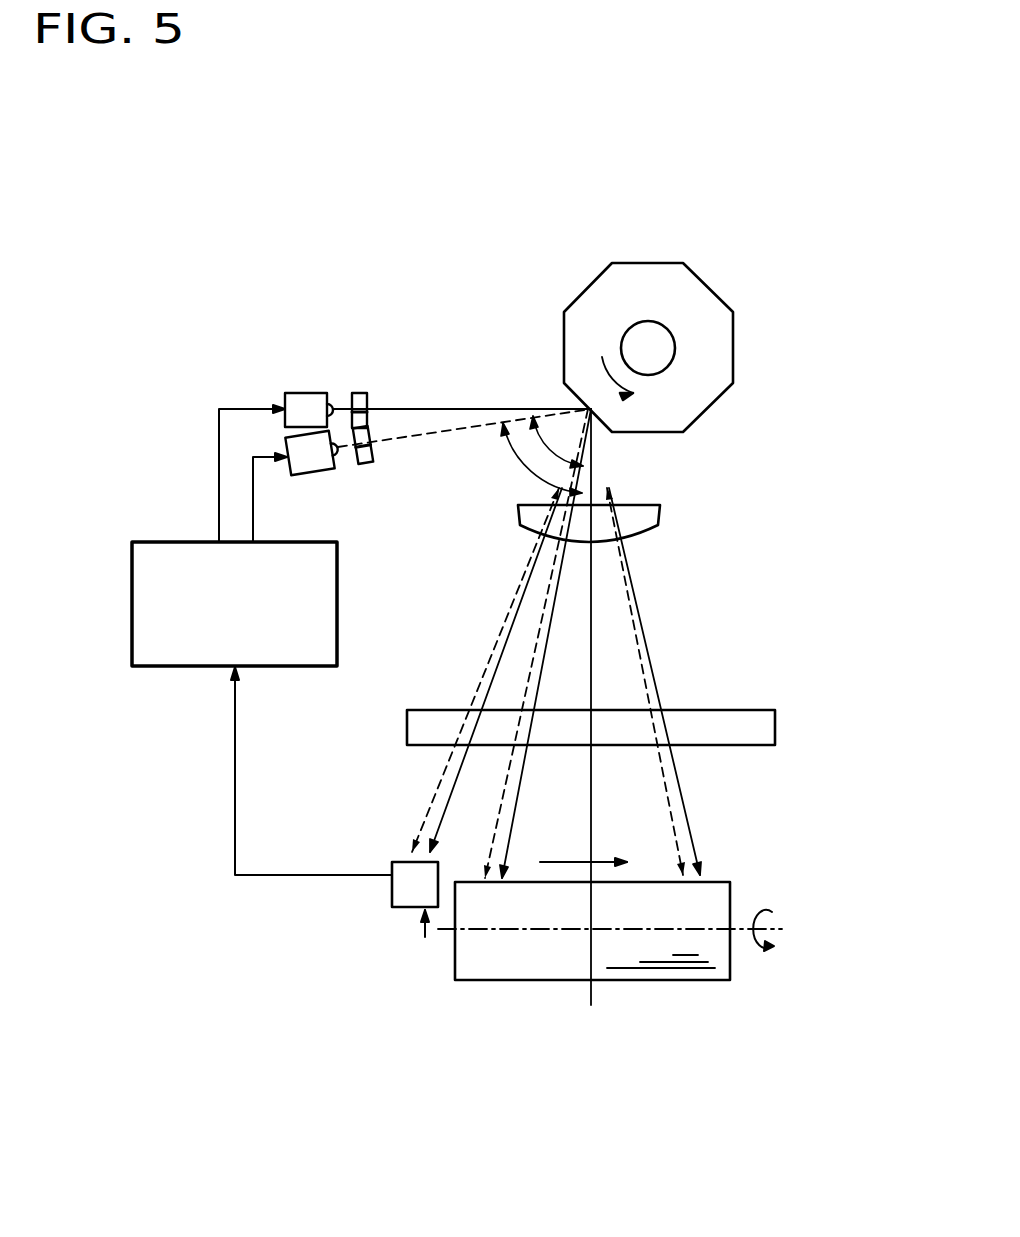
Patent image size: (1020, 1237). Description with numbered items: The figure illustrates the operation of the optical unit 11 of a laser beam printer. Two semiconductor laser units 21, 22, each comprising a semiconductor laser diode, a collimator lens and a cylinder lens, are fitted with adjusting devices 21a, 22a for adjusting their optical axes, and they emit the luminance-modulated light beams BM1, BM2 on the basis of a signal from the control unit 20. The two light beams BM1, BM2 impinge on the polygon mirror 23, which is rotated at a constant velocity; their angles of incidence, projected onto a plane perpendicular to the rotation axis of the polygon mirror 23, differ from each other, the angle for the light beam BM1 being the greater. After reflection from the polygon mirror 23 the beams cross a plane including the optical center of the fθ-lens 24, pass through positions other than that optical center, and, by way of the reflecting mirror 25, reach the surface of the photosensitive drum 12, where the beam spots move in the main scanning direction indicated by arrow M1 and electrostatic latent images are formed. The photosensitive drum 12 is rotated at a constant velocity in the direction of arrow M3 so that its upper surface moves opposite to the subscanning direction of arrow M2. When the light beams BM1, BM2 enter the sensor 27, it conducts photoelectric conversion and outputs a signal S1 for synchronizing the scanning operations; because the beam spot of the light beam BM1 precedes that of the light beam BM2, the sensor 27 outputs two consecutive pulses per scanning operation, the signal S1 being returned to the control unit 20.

The optical unit 11 is at (479, 254).
The photosensitive drum 12 is at (673, 982).
The control unit 20 is at (160, 667).
The semiconductor laser unit 21 is at (303, 390).
The adjusting device 21a is at (358, 392).
The semiconductor laser unit 22 is at (287, 440).
The adjusting device 22a is at (358, 463).
The polygon mirror 23 is at (725, 346).
The fθ-lens 24 is at (660, 508).
The reflecting mirror 25 is at (775, 722).
The sensor 27 is at (383, 888).
The light beam BM1 is at (467, 407).
The light beam BM2 is at (400, 443).
The arrow M1 is at (557, 857).
The subscanning direction M2 is at (425, 937).
The rotation direction M3 is at (763, 908).
The signal S1 is at (237, 770).